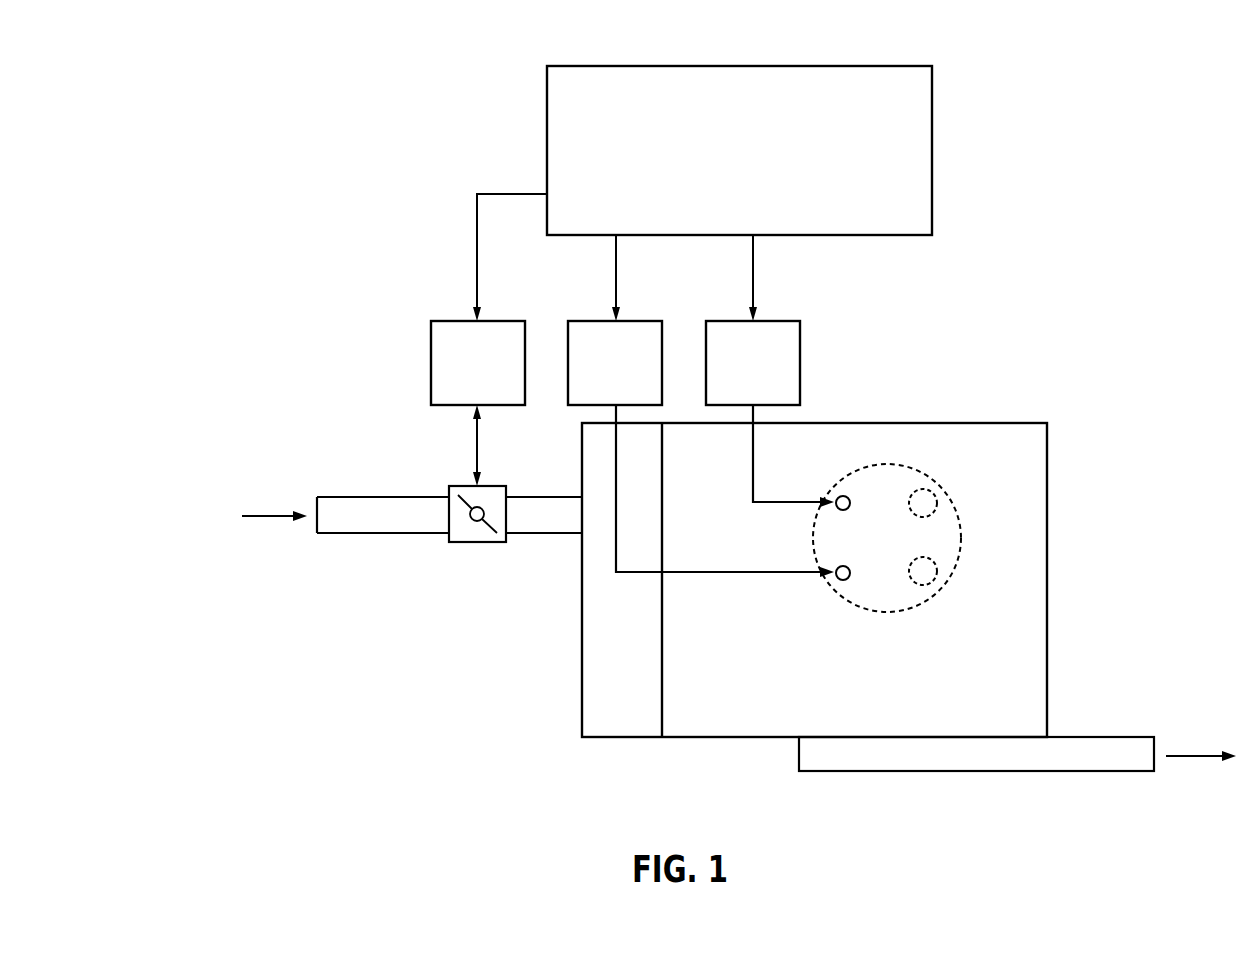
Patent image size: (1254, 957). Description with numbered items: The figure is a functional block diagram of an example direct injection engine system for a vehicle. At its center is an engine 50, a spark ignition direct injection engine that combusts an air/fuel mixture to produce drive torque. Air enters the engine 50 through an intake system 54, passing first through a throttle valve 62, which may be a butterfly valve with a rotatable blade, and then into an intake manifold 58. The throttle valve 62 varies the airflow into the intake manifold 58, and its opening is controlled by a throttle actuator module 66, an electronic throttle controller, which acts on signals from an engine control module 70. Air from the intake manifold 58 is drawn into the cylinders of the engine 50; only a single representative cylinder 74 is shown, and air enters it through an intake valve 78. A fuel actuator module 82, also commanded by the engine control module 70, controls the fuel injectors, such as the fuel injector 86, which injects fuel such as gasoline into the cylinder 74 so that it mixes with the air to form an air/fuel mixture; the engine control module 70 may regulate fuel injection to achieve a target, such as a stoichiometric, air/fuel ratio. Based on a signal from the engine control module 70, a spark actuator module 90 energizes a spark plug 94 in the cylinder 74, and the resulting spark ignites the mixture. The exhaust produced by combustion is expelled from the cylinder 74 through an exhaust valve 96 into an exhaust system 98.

The engine 50 is at (938, 423).
The intake system 54 is at (128, 428).
The intake manifold 58 is at (582, 451).
The throttle valve 62 is at (470, 542).
The throttle actuator module 66 is at (450, 321).
The engine control module 70 is at (738, 66).
The cylinder 74 is at (852, 611).
The intake valve 78 is at (926, 490).
The fuel actuator module 82 is at (644, 321).
The fuel injector 86 is at (837, 581).
The spark actuator module 90 is at (782, 321).
The spark plug 94 is at (837, 496).
The exhaust valve 96 is at (920, 585).
The exhaust system 98 is at (1105, 771).